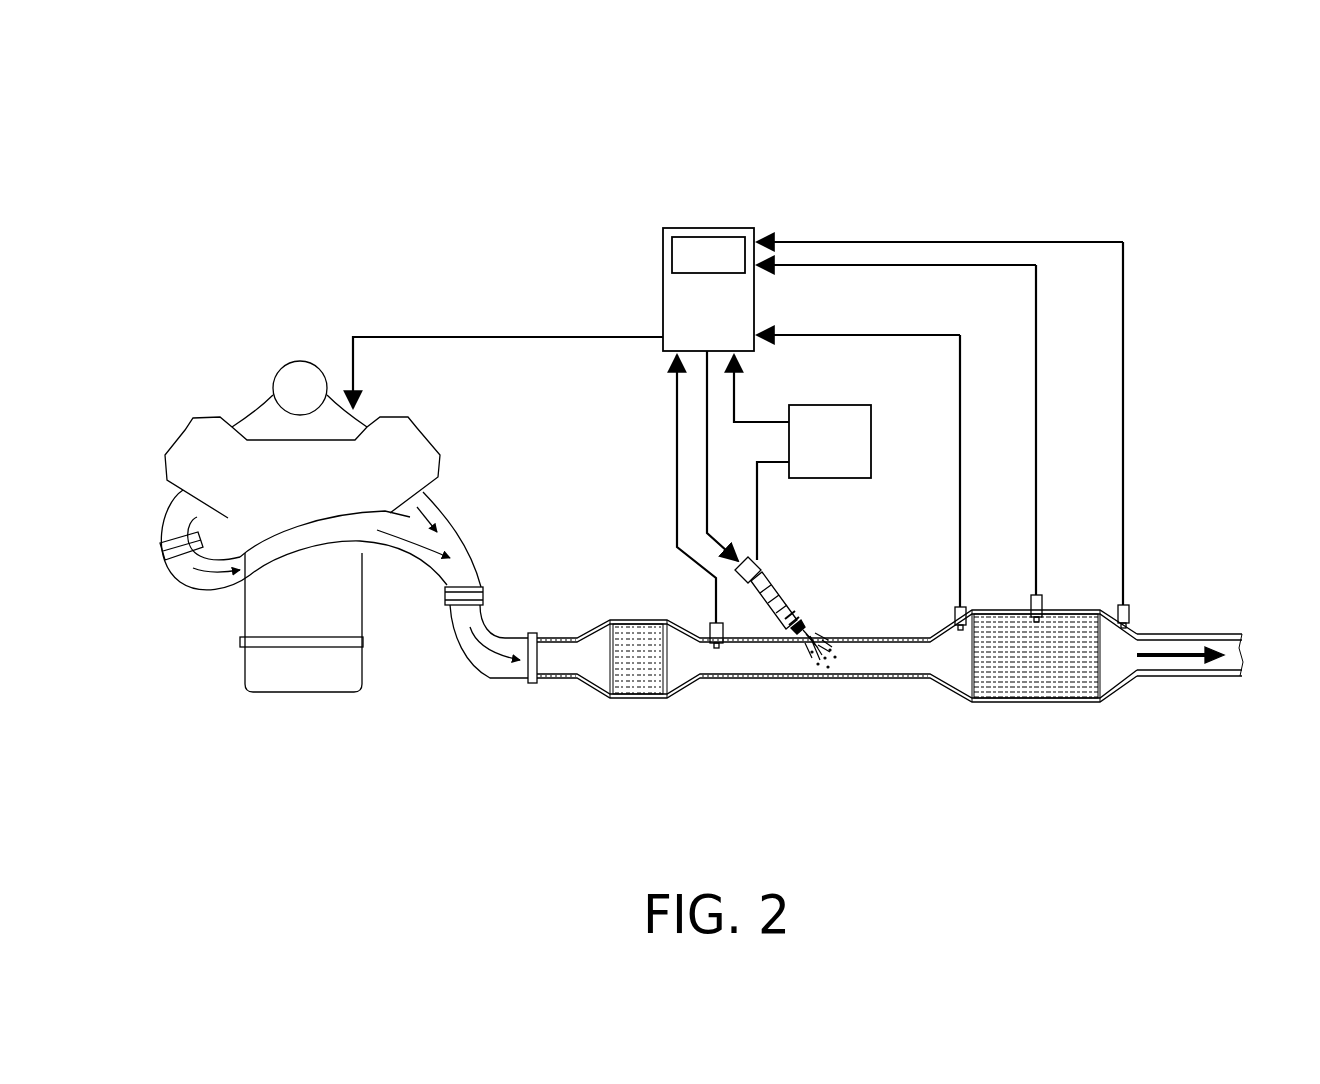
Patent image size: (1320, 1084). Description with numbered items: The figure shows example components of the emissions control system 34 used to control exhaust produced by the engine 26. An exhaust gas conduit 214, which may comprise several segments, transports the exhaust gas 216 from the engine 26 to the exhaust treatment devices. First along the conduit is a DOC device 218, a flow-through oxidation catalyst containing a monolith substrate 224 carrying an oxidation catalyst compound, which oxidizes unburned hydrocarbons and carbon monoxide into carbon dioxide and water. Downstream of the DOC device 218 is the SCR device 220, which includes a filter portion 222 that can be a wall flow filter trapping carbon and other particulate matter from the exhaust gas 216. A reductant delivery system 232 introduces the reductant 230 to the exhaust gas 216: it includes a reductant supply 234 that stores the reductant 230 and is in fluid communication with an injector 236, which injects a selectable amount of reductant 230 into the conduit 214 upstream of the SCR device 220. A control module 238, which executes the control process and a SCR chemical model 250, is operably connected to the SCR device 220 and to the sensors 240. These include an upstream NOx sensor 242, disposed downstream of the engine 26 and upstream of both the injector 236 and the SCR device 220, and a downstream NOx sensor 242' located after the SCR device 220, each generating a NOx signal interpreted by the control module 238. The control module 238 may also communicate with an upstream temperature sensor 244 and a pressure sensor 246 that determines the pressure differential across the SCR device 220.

The engine 26 is at (254, 388).
The exhaust gas conduit 214 is at (450, 515).
The exhaust gas 216 is at (480, 652).
The emissions control system 34 is at (750, 705).
The DOC device 218 is at (627, 700).
The substrate 224 is at (633, 628).
The upstream NOx sensor 242 is at (678, 611).
The injector 236 is at (810, 620).
The pressure sensor 246 is at (810, 650).
The upstream temperature sensor 244 is at (955, 617).
The downstream NOx sensor 242' is at (1172, 585).
The SCR device 220 is at (1062, 705).
The filter portion 222 is at (1028, 677).
The control module 238 is at (662, 290).
The SCR chemical model 250 is at (708, 255).
The reductant 230 is at (821, 450).
The reductant supply 234 is at (871, 437).
The reductant delivery system 232 is at (1020, 236).
The sensors 240 is at (1143, 490).